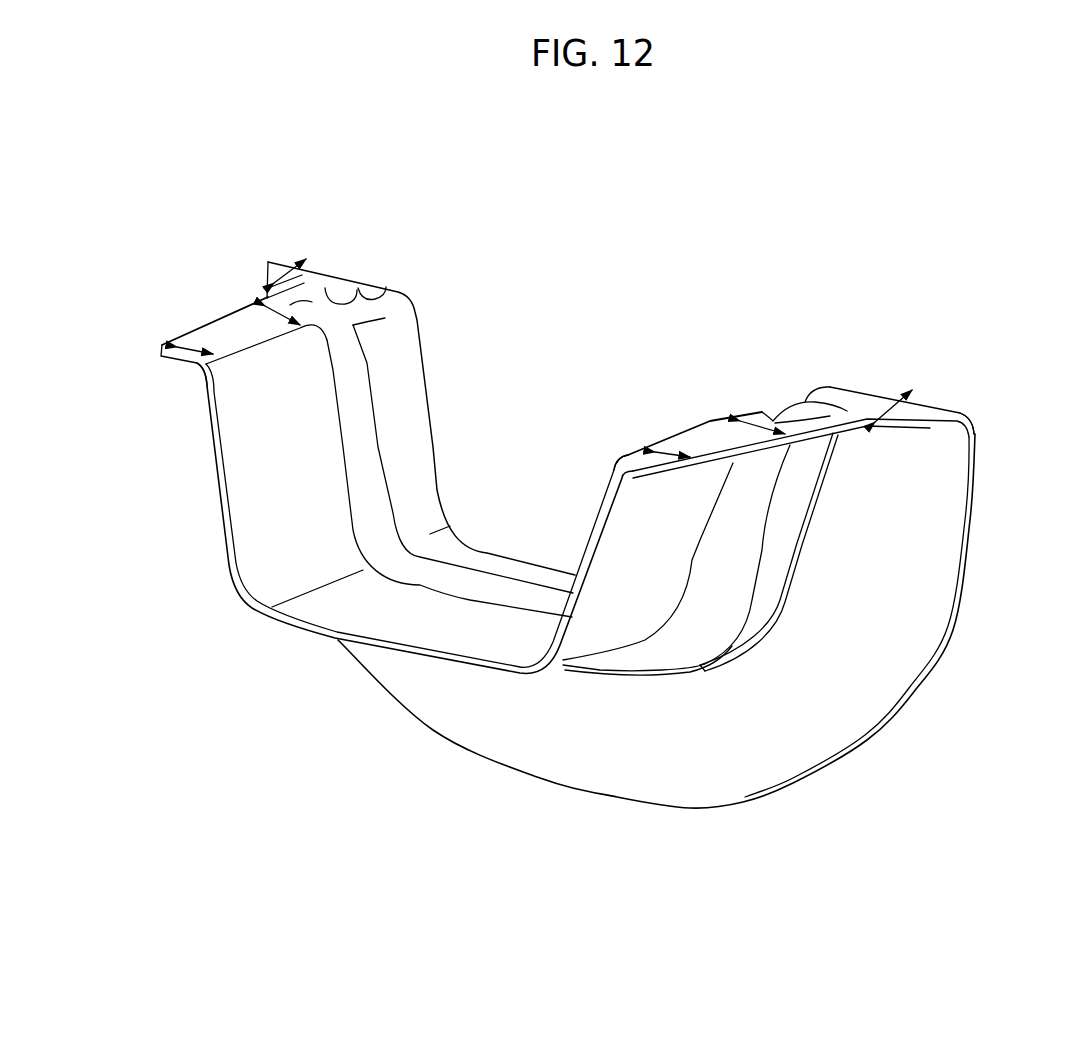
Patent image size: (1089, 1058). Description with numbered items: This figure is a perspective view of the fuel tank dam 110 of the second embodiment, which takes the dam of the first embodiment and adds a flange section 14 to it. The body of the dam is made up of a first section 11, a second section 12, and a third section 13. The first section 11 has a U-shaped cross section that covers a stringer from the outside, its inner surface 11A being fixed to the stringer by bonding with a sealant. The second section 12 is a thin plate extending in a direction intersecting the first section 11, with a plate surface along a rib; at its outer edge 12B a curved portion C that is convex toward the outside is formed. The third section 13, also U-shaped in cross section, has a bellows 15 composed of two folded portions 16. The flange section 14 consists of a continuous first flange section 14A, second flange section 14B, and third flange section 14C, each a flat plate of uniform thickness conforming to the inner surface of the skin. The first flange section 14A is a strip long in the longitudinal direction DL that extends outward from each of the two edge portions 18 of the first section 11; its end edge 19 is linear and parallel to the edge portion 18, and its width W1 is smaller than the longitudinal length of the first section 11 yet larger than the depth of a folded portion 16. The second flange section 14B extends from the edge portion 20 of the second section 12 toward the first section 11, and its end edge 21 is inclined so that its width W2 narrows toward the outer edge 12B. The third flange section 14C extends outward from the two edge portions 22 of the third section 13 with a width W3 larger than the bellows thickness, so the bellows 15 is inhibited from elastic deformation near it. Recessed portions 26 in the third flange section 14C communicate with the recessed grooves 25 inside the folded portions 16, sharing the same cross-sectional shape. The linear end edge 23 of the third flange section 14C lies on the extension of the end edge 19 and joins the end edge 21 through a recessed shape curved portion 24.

The fuel tank dam 110 is at (920, 260).
The first section 11 is at (259, 570).
The inner surface 11A is at (428, 626).
The second section 12 is at (912, 642).
The outer edge 12B is at (868, 752).
The third section 13 is at (712, 637).
The flange section 14 is at (158, 359).
The first flange section 14A is at (217, 340).
The second flange section 14B is at (284, 258).
The third flange section 14C is at (300, 292).
The bellows 15 is at (702, 668).
The folded portion 16 is at (682, 672).
The edge portion 18 is at (203, 390).
The end edge 19 is at (187, 332).
The edge portion 20 is at (973, 442).
The end edge 21 is at (267, 266).
The edge portion 22 is at (410, 302).
The end edge 23 is at (267, 292).
The recessed shape curved portion 24 is at (867, 426).
The recessed groove 25 is at (357, 448).
The recessed portion 26 is at (330, 292).
The width of the first flange section W1 is at (193, 358).
The width of the second flange section W2 is at (296, 258).
The width of the third flange section W3 is at (280, 318).
The curved portion C is at (793, 789).
The longitudinal direction DL is at (730, 185).